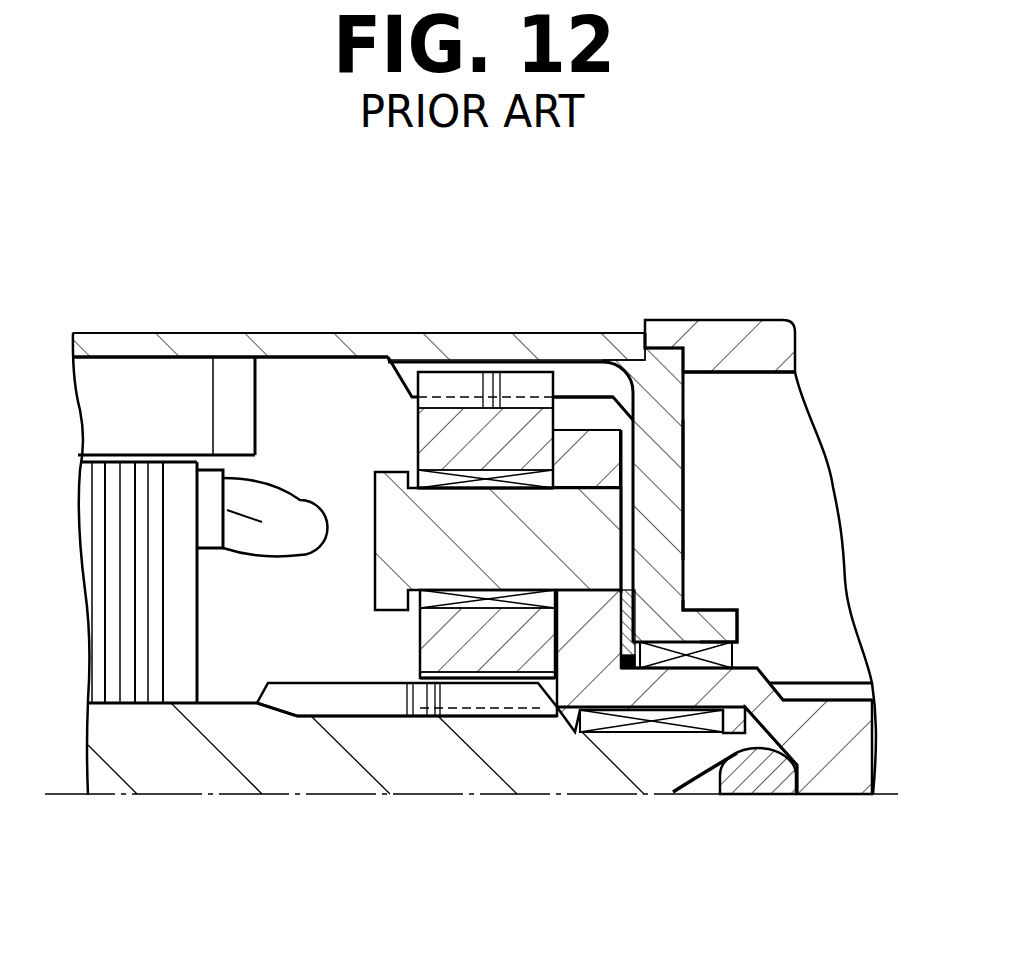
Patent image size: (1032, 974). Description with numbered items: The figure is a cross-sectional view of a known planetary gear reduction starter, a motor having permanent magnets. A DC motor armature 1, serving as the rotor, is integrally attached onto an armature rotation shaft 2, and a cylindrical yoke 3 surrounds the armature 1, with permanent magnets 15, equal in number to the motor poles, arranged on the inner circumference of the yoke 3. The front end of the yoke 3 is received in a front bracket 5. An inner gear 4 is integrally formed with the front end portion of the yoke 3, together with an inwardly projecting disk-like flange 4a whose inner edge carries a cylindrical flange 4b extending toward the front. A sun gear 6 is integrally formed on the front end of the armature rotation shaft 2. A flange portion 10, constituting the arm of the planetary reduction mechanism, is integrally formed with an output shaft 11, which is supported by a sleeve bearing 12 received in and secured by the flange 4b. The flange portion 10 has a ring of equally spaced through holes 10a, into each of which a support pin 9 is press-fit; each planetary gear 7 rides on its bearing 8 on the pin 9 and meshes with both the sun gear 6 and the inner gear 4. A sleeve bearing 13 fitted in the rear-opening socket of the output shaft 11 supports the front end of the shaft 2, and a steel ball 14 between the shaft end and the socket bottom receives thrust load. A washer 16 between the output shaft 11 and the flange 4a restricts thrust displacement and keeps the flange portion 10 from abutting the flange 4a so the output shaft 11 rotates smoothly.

The DC motor armature 1 is at (102, 603).
The armature rotation shaft 2 is at (188, 767).
The cylindrical yoke 3 is at (162, 347).
The inner gear 4 is at (530, 347).
The disk-like flange 4a is at (670, 483).
The cylindrical flange 4b is at (700, 620).
The front bracket 5 is at (750, 342).
The sun gear 6 is at (307, 703).
The planetary gear 7 is at (427, 427).
The bearing 8 is at (430, 473).
The support pin 9 is at (390, 573).
The flange portion 10 is at (607, 462).
The through holes 10a is at (592, 500).
The output shaft 11 is at (850, 733).
The sleeve bearing 12 is at (720, 655).
The sleeve bearing 13 is at (650, 720).
The steel ball 14 is at (752, 768).
The permanent magnets 15 is at (200, 373).
The washer 16 is at (632, 607).